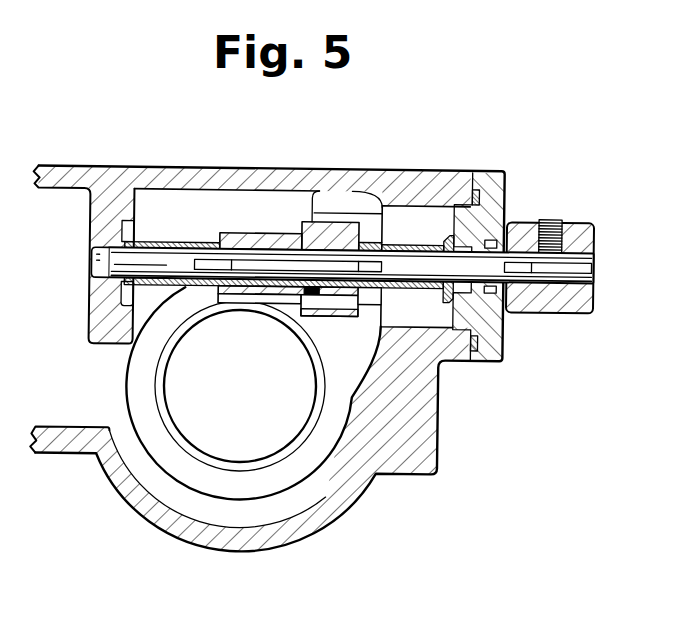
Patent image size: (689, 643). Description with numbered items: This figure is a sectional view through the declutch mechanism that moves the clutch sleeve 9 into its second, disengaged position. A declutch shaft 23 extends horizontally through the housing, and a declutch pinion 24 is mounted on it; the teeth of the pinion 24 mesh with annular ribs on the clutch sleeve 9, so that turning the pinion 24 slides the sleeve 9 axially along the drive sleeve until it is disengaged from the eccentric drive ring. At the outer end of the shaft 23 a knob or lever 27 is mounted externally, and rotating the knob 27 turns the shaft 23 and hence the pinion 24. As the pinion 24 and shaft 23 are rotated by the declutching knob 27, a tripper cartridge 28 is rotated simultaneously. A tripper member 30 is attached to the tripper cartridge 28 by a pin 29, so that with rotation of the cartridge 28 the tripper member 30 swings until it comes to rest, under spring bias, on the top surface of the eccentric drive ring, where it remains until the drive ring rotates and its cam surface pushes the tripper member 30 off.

The clutch sleeve 9 is at (163, 372).
The declutch shaft 23 is at (575, 254).
The declutch pinion 24 is at (233, 303).
The knob or lever 27 is at (513, 228).
The tripper cartridge 28 is at (330, 237).
The pin 29 is at (322, 300).
The tripper member 30 is at (297, 313).